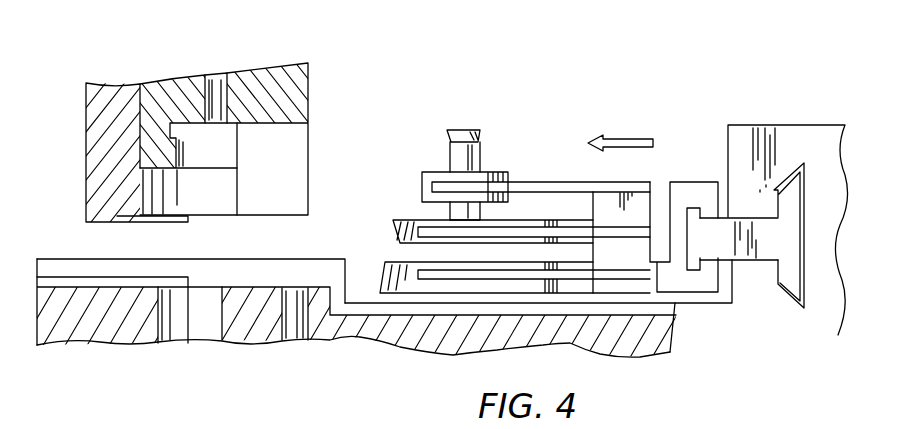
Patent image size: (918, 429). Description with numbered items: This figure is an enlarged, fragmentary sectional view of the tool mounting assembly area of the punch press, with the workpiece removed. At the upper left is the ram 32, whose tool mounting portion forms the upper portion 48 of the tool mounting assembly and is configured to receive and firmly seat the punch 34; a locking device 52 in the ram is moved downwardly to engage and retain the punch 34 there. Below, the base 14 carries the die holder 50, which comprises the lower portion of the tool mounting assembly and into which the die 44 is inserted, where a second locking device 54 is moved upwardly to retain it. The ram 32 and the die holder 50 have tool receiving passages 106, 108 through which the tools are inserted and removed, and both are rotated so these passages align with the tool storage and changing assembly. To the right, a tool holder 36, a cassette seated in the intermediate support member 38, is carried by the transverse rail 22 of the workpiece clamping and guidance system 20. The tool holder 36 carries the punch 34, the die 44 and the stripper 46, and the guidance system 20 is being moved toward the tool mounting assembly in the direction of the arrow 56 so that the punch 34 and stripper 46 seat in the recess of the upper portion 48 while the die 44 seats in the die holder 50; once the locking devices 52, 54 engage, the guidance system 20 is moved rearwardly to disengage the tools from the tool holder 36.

The base 14 is at (60, 340).
The workpiece clamping and guidance system 20 is at (773, 128).
The transverse rail 22 is at (770, 328).
The ram 32 is at (112, 88).
The punch 34 is at (466, 160).
The tool holder 36 is at (568, 232).
The intermediate support member 38 is at (687, 190).
The die 44 is at (407, 278).
The stripper 46 is at (398, 237).
The upper portion of the tool mounting assembly 48 is at (222, 188).
The die holder 50 is at (120, 278).
The locking device 52 is at (216, 75).
The locking device 54 is at (292, 335).
The arrow 56 is at (638, 147).
The tool receiving passage 106 is at (300, 180).
The tool receiving passage 108 is at (255, 278).